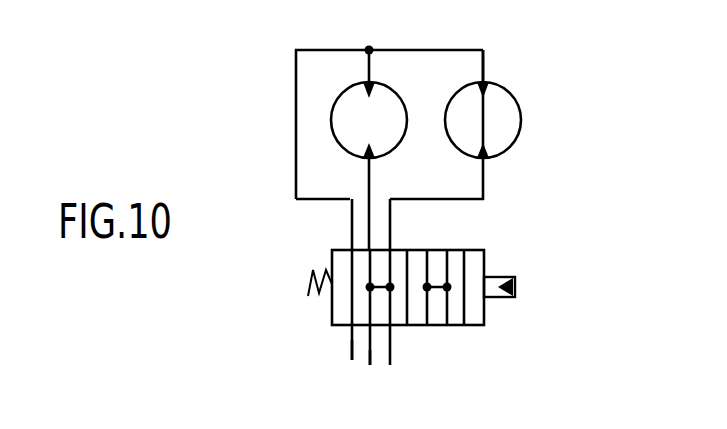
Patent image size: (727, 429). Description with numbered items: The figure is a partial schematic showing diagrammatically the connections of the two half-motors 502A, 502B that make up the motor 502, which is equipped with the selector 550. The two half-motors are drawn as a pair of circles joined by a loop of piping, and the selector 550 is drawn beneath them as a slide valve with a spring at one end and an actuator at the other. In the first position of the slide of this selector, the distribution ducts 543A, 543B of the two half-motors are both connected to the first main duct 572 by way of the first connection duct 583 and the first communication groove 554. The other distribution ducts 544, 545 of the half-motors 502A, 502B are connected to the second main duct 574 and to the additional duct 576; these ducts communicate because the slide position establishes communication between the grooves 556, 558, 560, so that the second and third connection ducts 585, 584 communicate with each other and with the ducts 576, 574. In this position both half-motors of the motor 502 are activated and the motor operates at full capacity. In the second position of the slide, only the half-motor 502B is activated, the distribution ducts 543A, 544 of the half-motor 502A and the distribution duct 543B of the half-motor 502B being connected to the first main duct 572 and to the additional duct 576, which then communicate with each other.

The motor 502 is at (440, 117).
The half-motor 502A is at (341, 117).
The half-motor 502B is at (522, 88).
The distribution duct 543A is at (377, 86).
The distribution duct 543B is at (491, 85).
The distribution duct 544 is at (355, 152).
The distribution duct 545 is at (487, 146).
The first connection duct 583 is at (295, 167).
The third connection duct 584 is at (373, 174).
The second connection duct 585 is at (485, 182).
The selector 550 is at (435, 292).
The first communication groove 554 is at (350, 250).
The groove 556 is at (373, 330).
The groove 558 is at (372, 250).
The groove 560 is at (395, 247).
The first main duct 572 is at (352, 355).
The second main duct 574 is at (390, 333).
The additional duct 576 is at (370, 358).